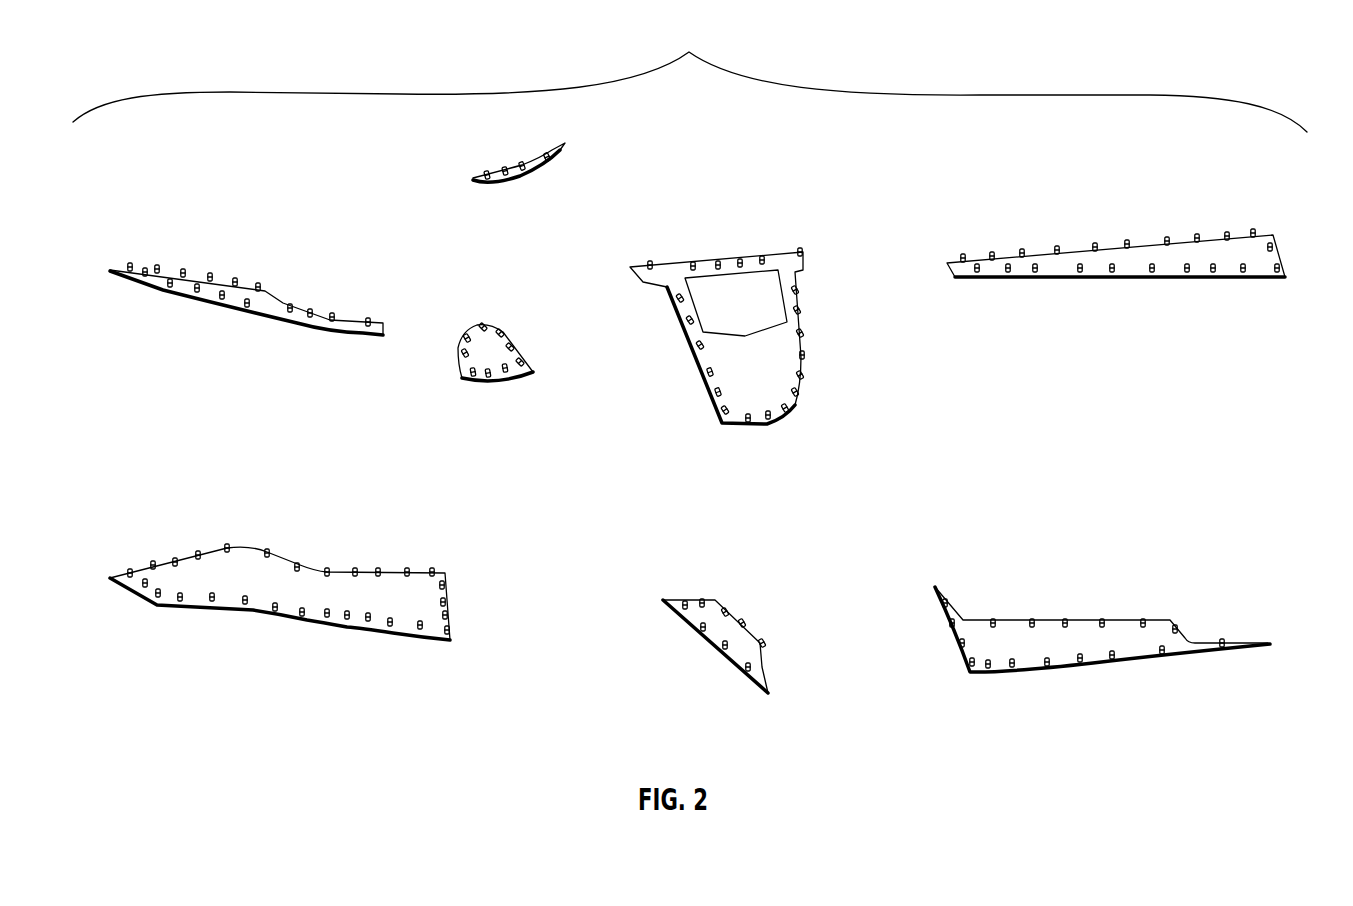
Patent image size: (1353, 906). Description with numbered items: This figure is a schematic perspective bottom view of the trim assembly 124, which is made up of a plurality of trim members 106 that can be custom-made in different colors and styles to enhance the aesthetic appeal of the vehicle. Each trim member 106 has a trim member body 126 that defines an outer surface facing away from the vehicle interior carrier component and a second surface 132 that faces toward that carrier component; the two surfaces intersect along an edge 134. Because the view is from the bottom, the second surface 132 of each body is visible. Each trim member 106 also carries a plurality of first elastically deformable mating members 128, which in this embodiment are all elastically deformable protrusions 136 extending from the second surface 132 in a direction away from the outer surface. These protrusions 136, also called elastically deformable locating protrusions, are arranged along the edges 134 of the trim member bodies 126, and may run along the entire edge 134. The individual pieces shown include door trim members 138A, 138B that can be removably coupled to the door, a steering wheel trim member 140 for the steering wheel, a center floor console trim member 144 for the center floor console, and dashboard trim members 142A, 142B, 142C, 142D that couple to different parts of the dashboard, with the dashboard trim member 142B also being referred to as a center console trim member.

The trim assembly 124 is at (690, 77).
The trim member 106 is at (222, 279).
The trim member body 126 is at (112, 270).
The first elastically deformable mating member 128 is at (209, 273).
The second surface 132 is at (260, 304).
The edge 134 is at (163, 290).
The elastically deformable protrusion 136 is at (157, 265).
The door trim member 138A is at (334, 316).
The door trim member 138B is at (263, 601).
The steering wheel trim member 140 is at (530, 373).
The dashboard trim member 142A is at (478, 172).
The dashboard trim member 142B is at (797, 408).
The dashboard trim member 142C is at (1170, 279).
The dashboard trim member 142D is at (1230, 649).
The center floor console trim member 144 is at (700, 637).